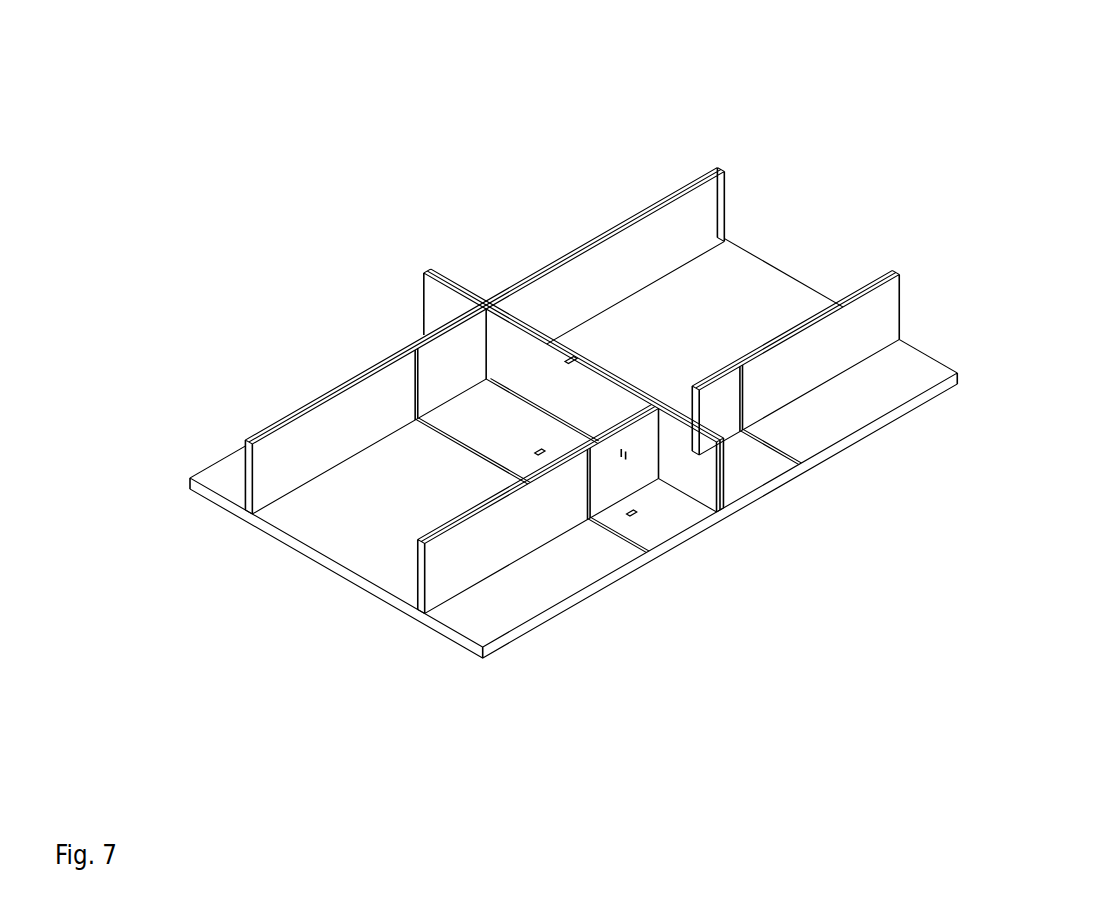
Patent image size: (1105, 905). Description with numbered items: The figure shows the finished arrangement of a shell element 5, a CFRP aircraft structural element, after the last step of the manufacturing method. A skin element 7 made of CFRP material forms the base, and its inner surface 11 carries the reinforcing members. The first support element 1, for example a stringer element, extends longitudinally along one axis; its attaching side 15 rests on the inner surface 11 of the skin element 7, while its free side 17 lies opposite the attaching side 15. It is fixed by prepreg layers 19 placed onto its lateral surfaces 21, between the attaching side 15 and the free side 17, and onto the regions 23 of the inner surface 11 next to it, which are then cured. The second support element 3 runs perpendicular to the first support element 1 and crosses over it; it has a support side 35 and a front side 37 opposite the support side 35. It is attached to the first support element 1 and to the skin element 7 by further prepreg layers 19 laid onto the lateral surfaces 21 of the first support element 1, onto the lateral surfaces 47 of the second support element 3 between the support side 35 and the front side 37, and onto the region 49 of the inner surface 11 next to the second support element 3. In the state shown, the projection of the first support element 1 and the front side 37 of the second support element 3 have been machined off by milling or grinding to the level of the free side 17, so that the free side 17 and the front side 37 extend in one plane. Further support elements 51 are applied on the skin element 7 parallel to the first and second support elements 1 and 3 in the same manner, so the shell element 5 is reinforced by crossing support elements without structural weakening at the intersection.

The first support element 1 is at (828, 360).
The second support element 3 is at (530, 350).
The shell element 5 is at (350, 240).
The skin element 7 is at (317, 560).
The inner surface 11 is at (765, 300).
The attaching side 15 is at (870, 360).
The free side 17 is at (870, 283).
The prepreg layers 19 is at (755, 462).
The lateral surfaces 21 is at (622, 462).
The regions 23 is at (540, 452).
The support side 35 is at (540, 408).
The front side 37 is at (572, 360).
The lateral surfaces 47 is at (604, 405).
The region 49 is at (632, 513).
The further support elements 51 is at (325, 443).